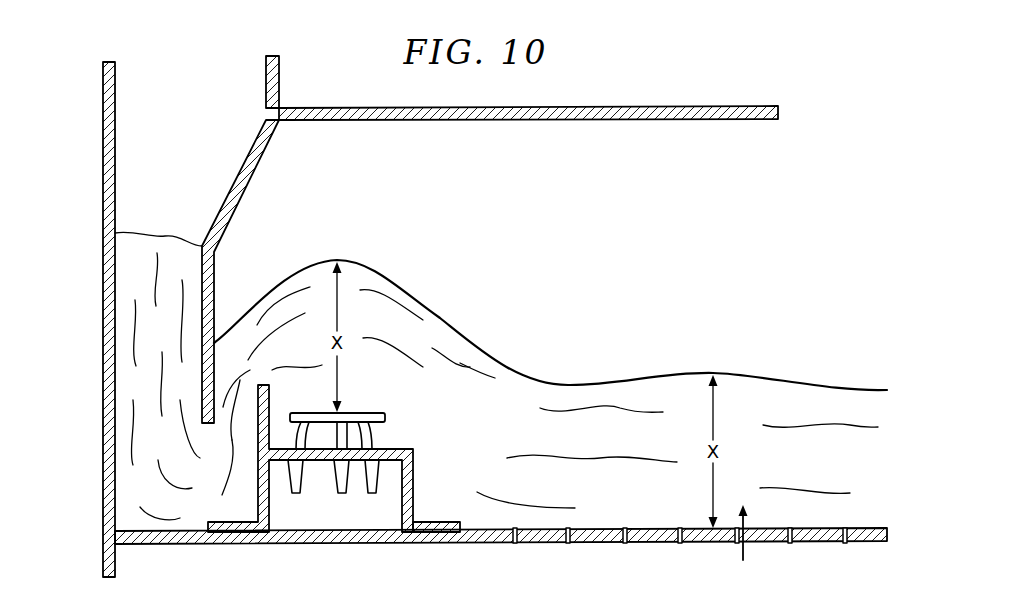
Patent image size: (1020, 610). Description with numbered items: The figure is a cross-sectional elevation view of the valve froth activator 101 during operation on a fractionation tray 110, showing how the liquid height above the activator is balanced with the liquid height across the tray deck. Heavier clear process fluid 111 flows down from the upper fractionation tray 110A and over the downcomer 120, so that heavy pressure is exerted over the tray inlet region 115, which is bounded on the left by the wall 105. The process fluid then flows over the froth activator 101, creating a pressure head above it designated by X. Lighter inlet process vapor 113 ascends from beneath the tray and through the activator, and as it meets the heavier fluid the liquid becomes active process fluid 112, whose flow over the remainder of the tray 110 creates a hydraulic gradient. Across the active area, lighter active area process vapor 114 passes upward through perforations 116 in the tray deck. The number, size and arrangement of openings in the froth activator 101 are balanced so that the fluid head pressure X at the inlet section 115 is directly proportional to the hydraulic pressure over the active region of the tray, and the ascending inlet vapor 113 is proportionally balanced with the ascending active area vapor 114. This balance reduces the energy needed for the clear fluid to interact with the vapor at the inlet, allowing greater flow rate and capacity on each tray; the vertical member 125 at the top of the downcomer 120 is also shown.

The valve froth activator 101 is at (440, 452).
The side wall 105 is at (108, 418).
The fractionation tray 110 is at (356, 545).
The upper fractionation tray 110A is at (671, 106).
The clear process fluid 111 is at (135, 315).
The active process fluid 112 is at (565, 390).
The inlet process vapor 113 is at (358, 447).
The active area process vapor 114 is at (746, 548).
The tray inlet region 115 is at (133, 485).
The perforations 116 is at (576, 545).
The downcomer 120 is at (236, 188).
The vertical fin 125 is at (266, 86).